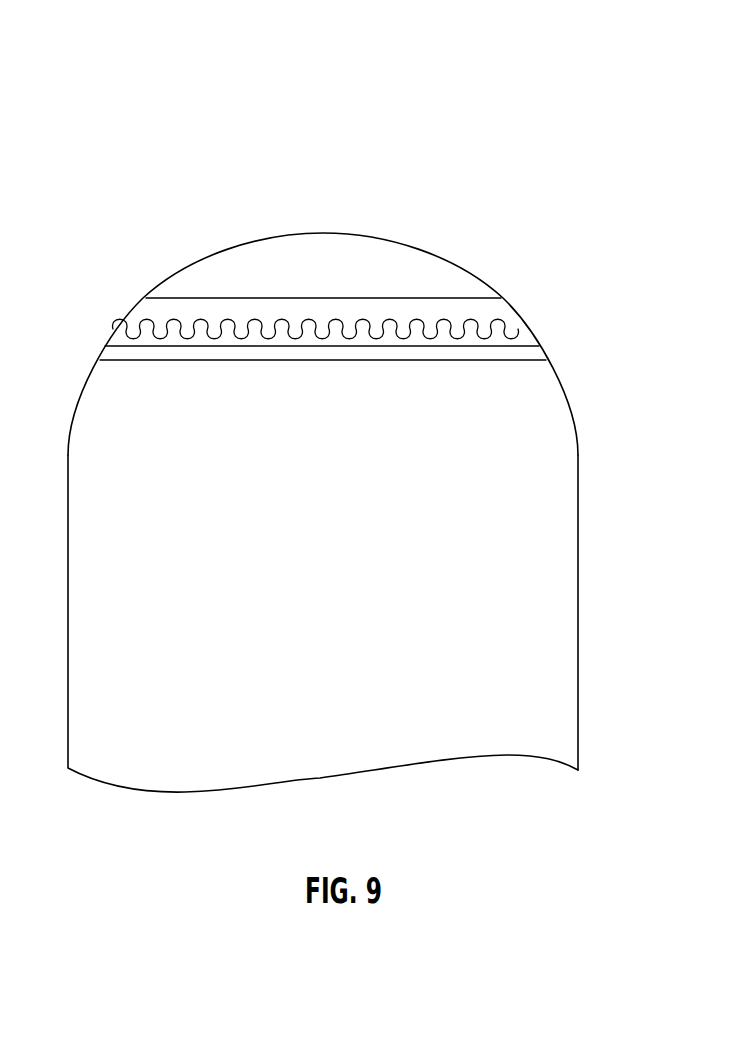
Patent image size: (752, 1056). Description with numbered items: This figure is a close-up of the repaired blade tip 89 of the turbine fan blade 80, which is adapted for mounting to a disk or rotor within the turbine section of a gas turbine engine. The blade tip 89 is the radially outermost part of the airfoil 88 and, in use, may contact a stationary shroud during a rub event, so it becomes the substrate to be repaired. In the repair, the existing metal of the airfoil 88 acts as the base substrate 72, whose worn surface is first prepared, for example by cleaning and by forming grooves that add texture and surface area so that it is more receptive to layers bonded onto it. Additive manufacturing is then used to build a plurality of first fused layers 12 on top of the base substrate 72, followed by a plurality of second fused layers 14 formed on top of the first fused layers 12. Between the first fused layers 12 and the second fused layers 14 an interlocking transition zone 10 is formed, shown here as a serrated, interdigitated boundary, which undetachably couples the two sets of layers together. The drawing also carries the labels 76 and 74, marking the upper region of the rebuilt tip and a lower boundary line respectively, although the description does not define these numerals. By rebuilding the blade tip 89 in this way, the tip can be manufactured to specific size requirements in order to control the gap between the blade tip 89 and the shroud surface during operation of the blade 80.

The turbine fan blade 80 is at (342, 404).
The blade tip 89 is at (330, 299).
The upper film region 76 is at (319, 262).
The second fused layers 14 is at (152, 312).
The interlocking transition zone 10 is at (532, 317).
The first fused layers 12 is at (118, 341).
The lower seal line 74 is at (533, 350).
The base substrate 72 is at (313, 448).
The airfoil 88 is at (535, 703).